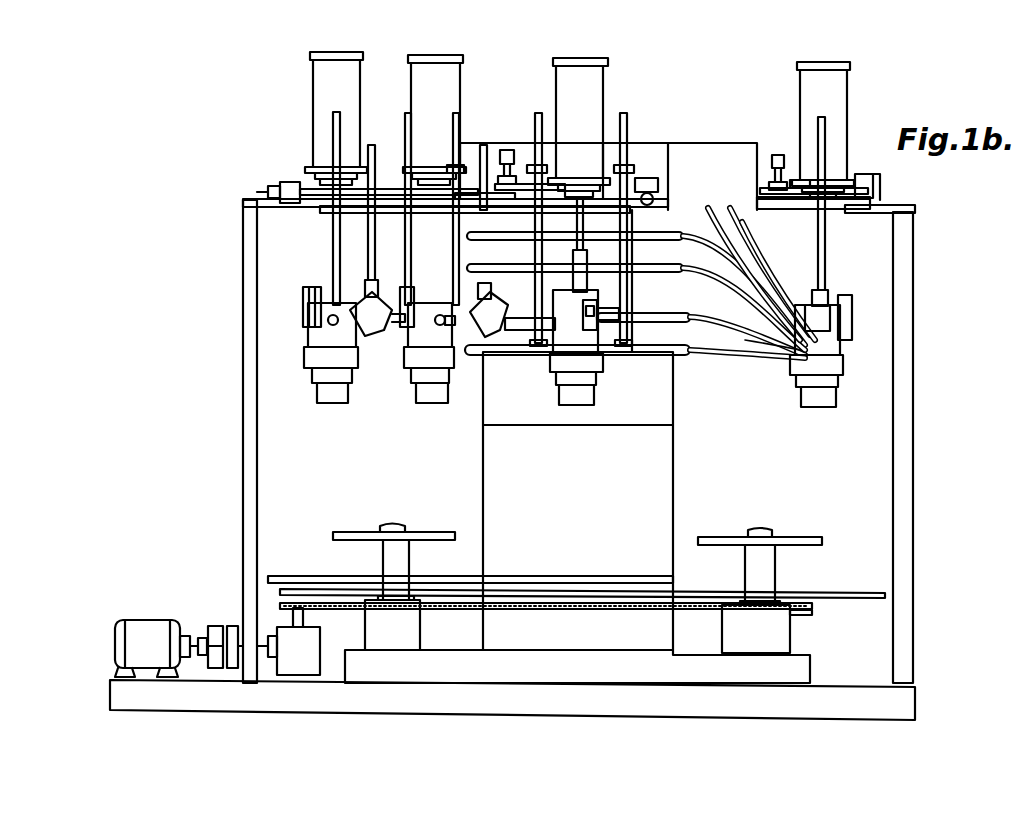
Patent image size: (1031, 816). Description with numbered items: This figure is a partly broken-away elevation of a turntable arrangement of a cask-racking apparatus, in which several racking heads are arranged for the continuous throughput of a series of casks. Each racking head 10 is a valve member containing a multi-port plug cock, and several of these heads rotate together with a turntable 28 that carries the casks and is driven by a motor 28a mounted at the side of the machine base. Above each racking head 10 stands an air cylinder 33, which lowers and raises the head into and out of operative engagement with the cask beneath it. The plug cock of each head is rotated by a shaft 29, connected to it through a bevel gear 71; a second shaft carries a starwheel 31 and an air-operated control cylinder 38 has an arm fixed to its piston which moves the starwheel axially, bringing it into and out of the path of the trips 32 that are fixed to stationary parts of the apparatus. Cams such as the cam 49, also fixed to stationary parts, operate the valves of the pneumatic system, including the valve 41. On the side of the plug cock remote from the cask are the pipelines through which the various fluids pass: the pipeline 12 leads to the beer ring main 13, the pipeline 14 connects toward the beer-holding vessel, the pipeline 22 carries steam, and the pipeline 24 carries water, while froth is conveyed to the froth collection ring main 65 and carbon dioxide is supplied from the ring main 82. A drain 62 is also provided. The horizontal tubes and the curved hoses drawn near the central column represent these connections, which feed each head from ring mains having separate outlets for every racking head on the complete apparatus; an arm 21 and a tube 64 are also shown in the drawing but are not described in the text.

The racking head 10 is at (425, 396).
The pipeline 12 is at (727, 342).
The beer ring main 13 is at (498, 200).
The pipeline 14 is at (762, 272).
The arm 21 is at (605, 312).
The pipeline 22 is at (742, 237).
The pipeline 24 is at (752, 256).
The turntable 28 is at (833, 592).
The motor 28a is at (160, 625).
The shaft 29 is at (365, 240).
The starwheel 31 is at (472, 188).
The trips 32 is at (862, 178).
The air cylinder 33 is at (417, 85).
The control cylinder 38 is at (505, 158).
The valve 41 is at (648, 178).
The cam 49 is at (288, 182).
The drain 62 is at (758, 335).
The tube 64 is at (738, 298).
The froth collection ring main 65 is at (663, 272).
The bevel gear 71 is at (360, 330).
The carbon dioxide ring main 82 is at (662, 240).